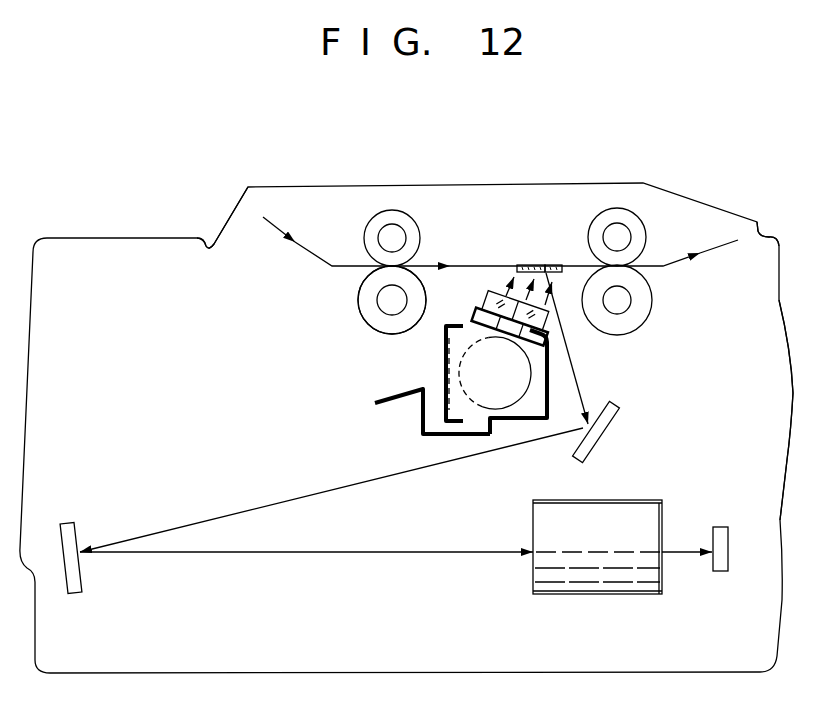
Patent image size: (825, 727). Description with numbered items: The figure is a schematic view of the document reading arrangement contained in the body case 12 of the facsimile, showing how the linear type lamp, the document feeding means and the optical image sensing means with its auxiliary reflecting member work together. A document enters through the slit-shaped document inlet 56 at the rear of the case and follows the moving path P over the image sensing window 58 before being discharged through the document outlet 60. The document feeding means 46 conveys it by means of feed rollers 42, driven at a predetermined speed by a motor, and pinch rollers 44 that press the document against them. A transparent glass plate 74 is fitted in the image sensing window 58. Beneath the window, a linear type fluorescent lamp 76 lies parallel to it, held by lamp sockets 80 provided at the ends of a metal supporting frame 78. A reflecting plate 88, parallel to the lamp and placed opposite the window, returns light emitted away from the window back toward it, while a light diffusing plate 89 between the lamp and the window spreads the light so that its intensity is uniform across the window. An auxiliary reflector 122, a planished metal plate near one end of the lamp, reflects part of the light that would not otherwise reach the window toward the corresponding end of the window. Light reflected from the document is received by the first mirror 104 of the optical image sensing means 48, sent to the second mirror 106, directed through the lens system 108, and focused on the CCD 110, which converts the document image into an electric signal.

The body case 12 is at (587, 182).
The document inlet 56 is at (233, 200).
The document outlet 60 is at (763, 228).
The moving path of the document P is at (680, 257).
The pinch rollers 44 is at (392, 210).
The feed rollers 42 is at (365, 312).
The document feeding means 46 is at (357, 293).
The transparent glass plate 74 is at (523, 262).
The image sensing window 58 is at (572, 264).
The auxiliary reflector 122 is at (502, 288).
The light diffusing plate 89 is at (478, 311).
The linear type fluorescent lamp 76 is at (468, 360).
The metal supporting frame 78 is at (443, 375).
The lamp sockets 80 is at (450, 397).
The reflecting plate 88 is at (516, 437).
The first mirror 104 is at (597, 452).
The optical image sensing means 48 is at (668, 472).
The second mirror 106 is at (82, 570).
The lens system 108 is at (612, 595).
The CCD 110 is at (720, 572).